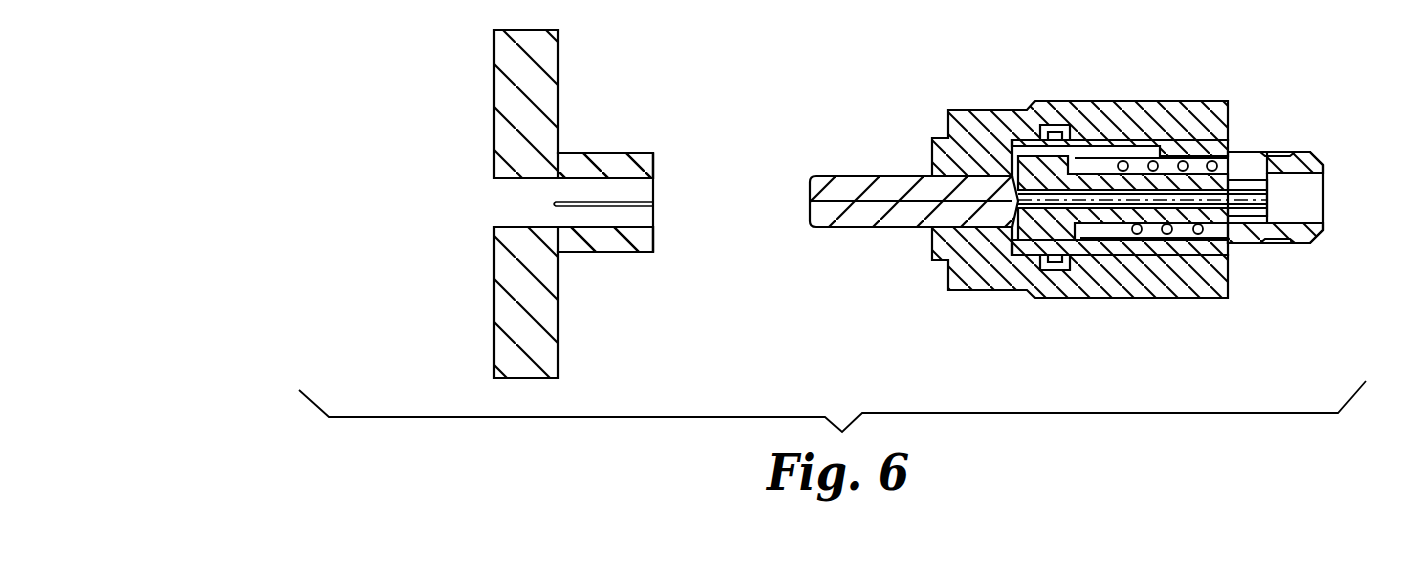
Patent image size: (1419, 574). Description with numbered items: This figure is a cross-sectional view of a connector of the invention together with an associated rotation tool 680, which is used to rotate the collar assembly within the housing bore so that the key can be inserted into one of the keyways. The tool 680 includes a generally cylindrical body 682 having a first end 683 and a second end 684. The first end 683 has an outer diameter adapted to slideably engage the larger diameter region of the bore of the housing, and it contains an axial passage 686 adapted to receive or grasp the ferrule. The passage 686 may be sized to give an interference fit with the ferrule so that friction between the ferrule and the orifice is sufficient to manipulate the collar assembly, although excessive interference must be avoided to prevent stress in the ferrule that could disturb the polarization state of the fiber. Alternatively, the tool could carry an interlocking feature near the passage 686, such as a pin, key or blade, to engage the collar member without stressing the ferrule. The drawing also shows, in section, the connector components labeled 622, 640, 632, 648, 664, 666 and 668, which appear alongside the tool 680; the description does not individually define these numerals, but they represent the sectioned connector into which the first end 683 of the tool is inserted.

The tool 680 is at (565, 204).
The generally cylindrical body 682 is at (617, 160).
The first end 683 is at (653, 240).
The second end 684 is at (494, 207).
The axial passage 686 is at (604, 224).
The rod / shaft 622 is at (838, 183).
The connector assembly 640 is at (1162, 196).
The ferrule / collet 632 is at (1222, 165).
The tube end 648 is at (1230, 238).
The outer body 664 is at (1021, 140).
The inner sleeve 666 is at (1080, 145).
The lower body segment 668 is at (1077, 242).